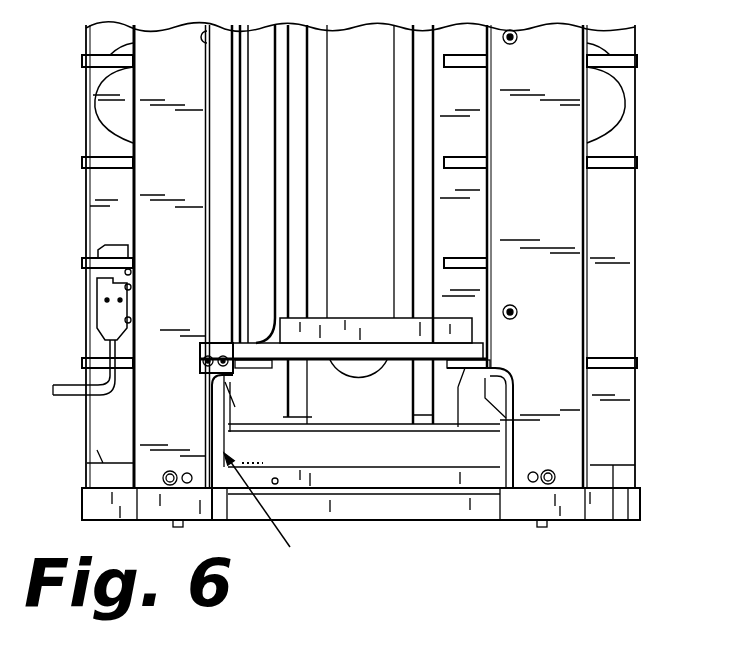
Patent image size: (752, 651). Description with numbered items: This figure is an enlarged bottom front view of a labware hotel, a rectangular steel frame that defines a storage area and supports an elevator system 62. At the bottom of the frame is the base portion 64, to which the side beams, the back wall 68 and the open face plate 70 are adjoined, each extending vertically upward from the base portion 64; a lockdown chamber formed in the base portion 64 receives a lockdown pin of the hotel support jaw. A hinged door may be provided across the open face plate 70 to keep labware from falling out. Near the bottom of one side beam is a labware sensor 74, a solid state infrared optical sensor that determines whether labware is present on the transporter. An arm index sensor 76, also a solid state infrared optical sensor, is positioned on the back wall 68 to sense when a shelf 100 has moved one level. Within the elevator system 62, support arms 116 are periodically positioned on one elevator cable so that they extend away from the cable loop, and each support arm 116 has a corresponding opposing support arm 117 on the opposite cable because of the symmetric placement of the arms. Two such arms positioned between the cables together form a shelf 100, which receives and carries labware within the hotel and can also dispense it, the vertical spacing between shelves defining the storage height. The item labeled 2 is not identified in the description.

The press platen 2 is at (415, 327).
The elevator system 62 is at (482, 164).
The base portion 64 is at (641, 505).
The back wall 68 is at (636, 227).
The open face plate 70 is at (553, 285).
The labware sensor 74 is at (268, 517).
The arm index sensor 76 is at (100, 307).
The shelf 100 is at (466, 368).
The support arm 116 is at (495, 432).
The opposing support arm 117 is at (255, 362).